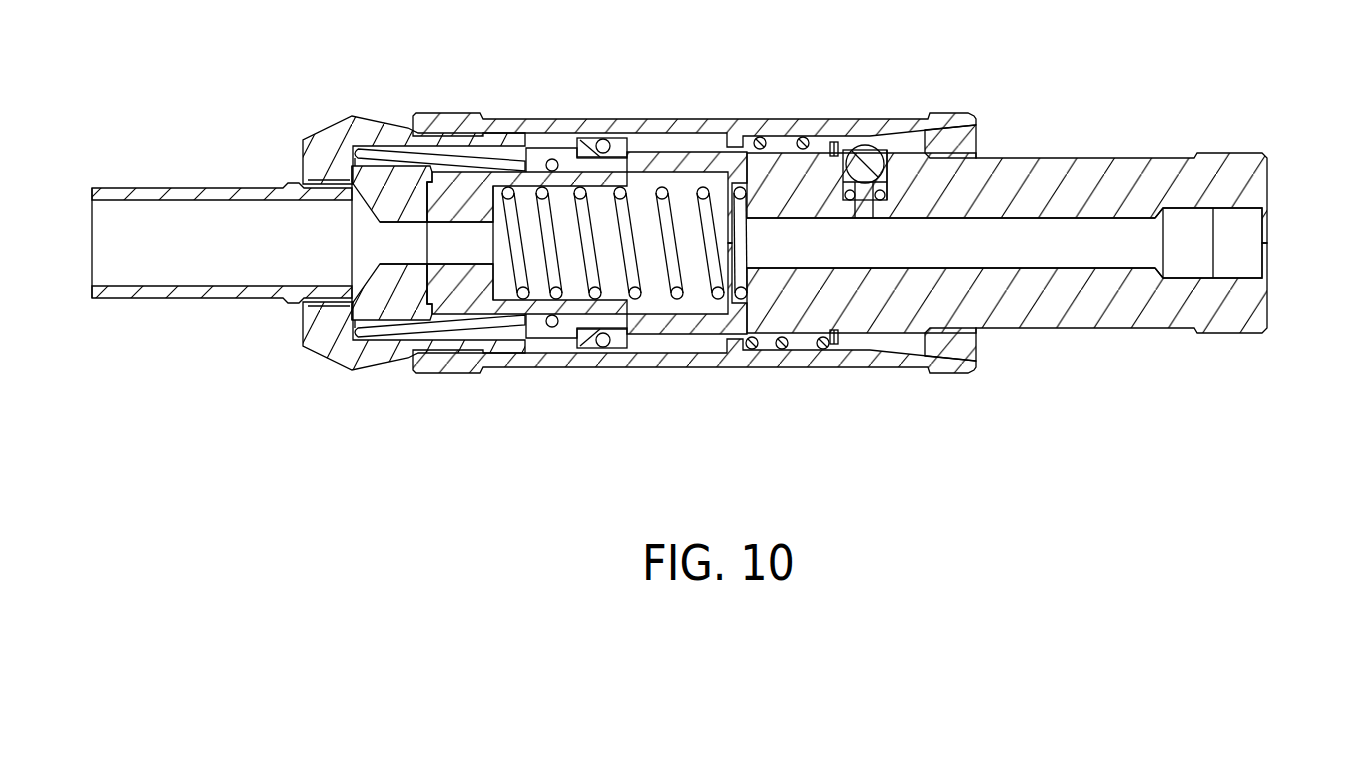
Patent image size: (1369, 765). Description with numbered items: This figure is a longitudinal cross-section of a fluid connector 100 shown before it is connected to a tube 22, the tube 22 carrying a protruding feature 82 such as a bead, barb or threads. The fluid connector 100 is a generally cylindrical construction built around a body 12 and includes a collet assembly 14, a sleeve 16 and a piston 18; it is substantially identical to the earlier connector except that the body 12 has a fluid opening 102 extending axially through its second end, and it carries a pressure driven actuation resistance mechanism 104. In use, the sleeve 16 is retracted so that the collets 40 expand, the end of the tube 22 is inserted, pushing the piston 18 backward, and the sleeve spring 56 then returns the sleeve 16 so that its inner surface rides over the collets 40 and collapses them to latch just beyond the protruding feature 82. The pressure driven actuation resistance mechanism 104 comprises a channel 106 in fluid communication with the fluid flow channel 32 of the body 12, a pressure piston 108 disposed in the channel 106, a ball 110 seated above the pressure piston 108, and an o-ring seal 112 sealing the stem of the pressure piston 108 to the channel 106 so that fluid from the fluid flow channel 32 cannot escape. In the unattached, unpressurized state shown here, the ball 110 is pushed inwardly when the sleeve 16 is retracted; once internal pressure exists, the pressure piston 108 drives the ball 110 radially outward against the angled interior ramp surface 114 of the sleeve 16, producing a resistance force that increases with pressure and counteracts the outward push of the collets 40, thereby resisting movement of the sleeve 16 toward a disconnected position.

The body 12 is at (1140, 338).
The collet assembly 14 is at (310, 120).
The sleeve 16 is at (657, 105).
The piston 18 is at (467, 296).
The tube 22 is at (190, 188).
The fluid flow channel 32 is at (1035, 258).
The collets 40 is at (322, 343).
The sleeve spring 56 is at (803, 135).
The protruding feature 82 is at (300, 180).
The fluid connector 100 is at (765, 106).
The fluid opening 102 is at (1250, 245).
The pressure driven actuation resistance mechanism 104 is at (880, 224).
The channel 106 is at (855, 222).
The pressure piston 108 is at (863, 218).
The ball 110 is at (866, 145).
The o-ring seal 112 is at (888, 188).
The angled interior ramp surface 114 is at (979, 134).